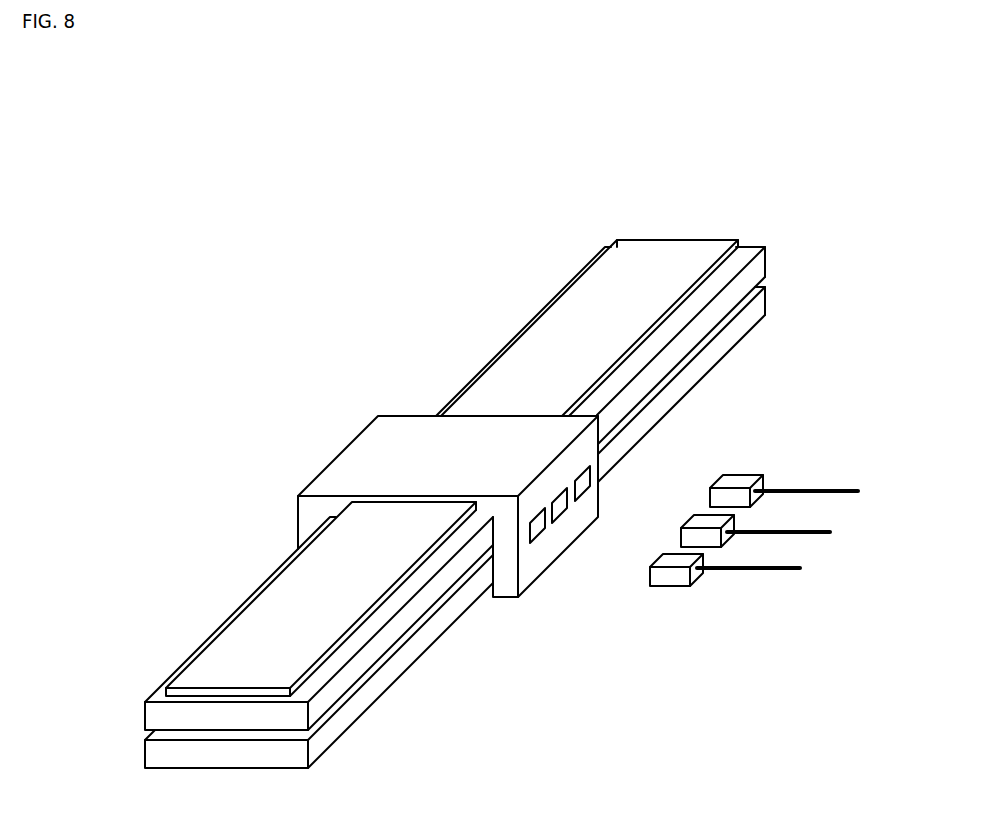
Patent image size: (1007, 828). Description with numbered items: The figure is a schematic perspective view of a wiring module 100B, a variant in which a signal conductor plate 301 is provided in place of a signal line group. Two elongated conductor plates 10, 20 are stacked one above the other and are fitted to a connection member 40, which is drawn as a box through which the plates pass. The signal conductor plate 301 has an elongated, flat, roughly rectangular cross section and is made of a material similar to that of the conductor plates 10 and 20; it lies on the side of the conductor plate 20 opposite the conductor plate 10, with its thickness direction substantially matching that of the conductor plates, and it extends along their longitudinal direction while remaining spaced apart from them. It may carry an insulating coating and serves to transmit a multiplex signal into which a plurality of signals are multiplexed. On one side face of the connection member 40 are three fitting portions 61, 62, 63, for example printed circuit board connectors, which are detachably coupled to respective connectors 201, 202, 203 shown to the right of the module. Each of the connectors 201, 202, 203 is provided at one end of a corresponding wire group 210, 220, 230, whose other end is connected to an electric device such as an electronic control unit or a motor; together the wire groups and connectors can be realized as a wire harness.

The wiring module 100B is at (645, 148).
The conductor plate 10 is at (370, 692).
The conductor plate 20 is at (370, 648).
The signal conductor plate 301 is at (267, 612).
The connection member 40 is at (399, 432).
The fitting portion 61 is at (545, 528).
The fitting portion 62 is at (567, 510).
The fitting portion 63 is at (590, 484).
The connector 201 is at (673, 560).
The connector 202 is at (703, 515).
The connector 203 is at (735, 473).
The wire group 210 is at (757, 572).
The wire group 220 is at (797, 532).
The wire group 230 is at (813, 488).